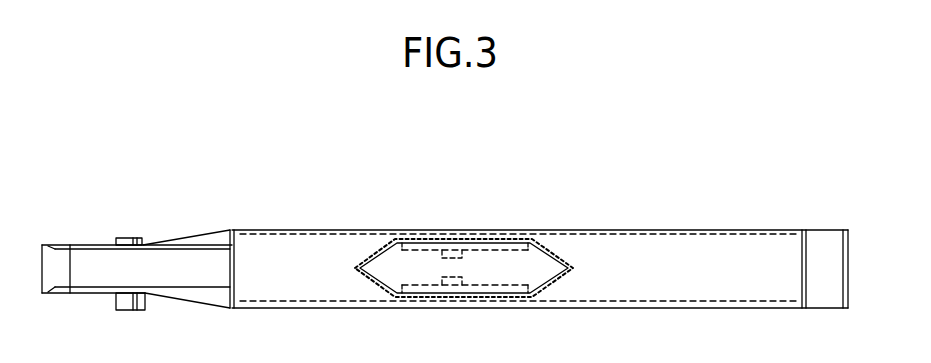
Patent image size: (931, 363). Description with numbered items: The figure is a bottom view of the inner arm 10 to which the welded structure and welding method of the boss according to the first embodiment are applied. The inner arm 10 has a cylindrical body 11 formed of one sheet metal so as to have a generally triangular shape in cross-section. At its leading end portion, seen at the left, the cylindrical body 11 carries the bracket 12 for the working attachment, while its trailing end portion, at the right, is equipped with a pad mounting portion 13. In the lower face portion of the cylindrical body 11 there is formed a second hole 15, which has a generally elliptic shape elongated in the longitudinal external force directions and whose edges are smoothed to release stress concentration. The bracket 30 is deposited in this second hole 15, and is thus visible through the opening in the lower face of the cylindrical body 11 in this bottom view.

The inner arm 10 is at (514, 136).
The cylindrical body 11 is at (663, 230).
The bracket 12 is at (152, 260).
The pad mounting portion 13 is at (822, 243).
The bracket 30 is at (421, 258).
The second hole 15 is at (511, 290).